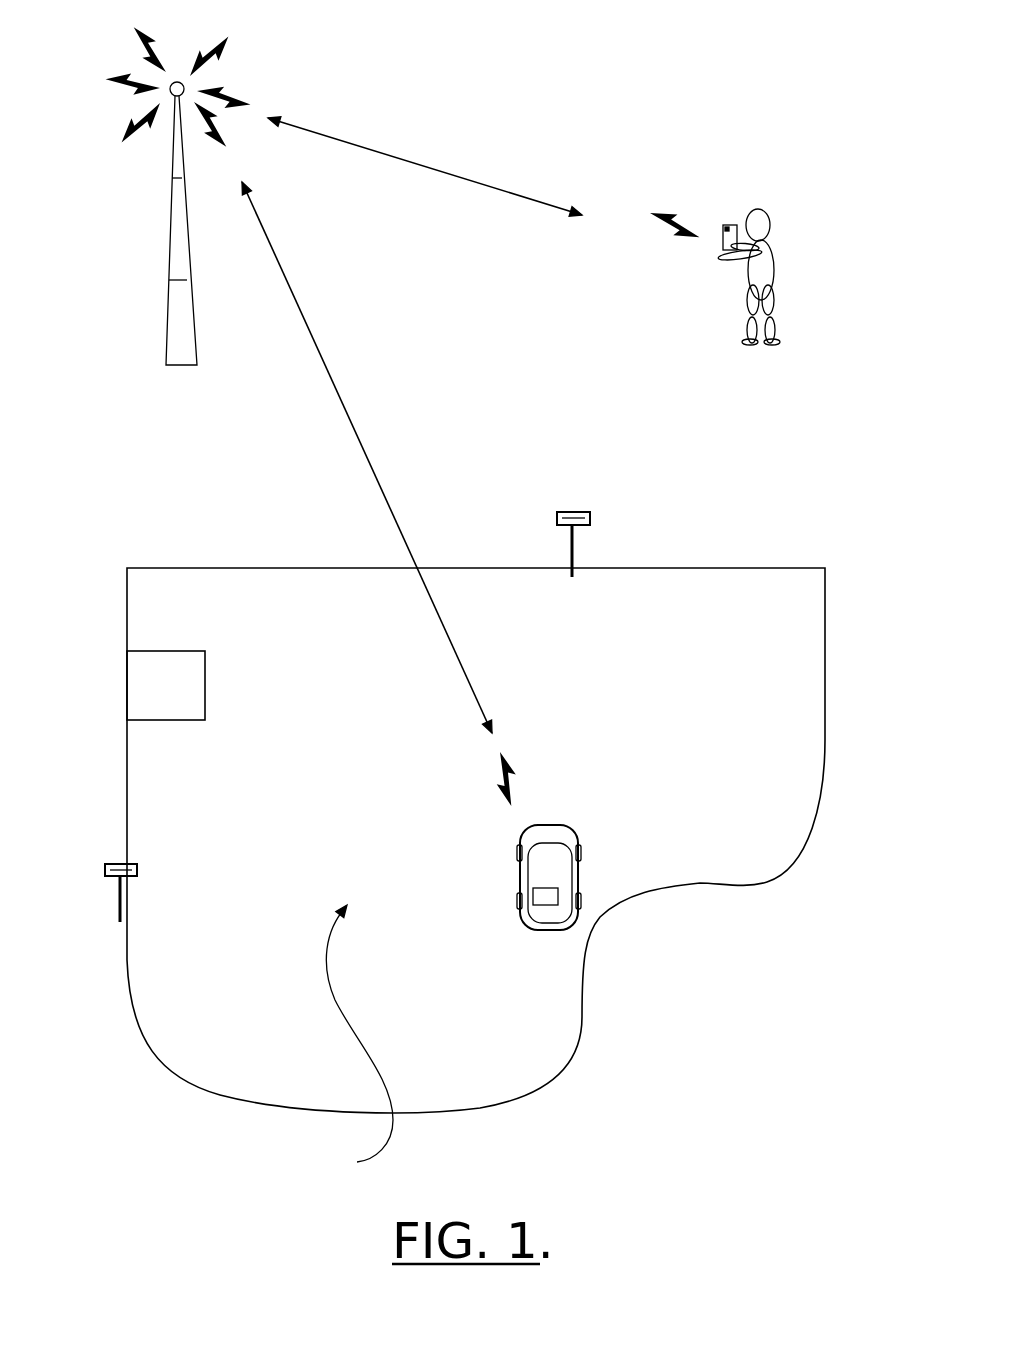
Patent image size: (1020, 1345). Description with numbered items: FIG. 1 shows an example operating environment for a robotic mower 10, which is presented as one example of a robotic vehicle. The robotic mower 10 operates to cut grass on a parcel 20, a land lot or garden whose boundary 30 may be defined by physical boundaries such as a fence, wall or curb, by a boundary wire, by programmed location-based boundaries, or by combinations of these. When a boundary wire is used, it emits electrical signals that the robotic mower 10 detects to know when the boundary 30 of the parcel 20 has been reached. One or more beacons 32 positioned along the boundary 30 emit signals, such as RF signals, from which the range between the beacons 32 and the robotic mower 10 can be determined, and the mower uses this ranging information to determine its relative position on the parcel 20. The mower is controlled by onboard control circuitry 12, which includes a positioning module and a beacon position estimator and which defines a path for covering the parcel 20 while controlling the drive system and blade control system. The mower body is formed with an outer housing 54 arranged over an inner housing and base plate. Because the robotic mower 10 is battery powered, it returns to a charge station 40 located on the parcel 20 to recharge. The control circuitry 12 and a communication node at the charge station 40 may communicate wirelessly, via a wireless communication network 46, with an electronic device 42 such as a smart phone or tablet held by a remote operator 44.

The robotic mower 10 is at (591, 855).
The control circuitry 12 is at (551, 886).
The parcel 20 is at (355, 1042).
The boundary 30 is at (582, 1017).
The beacons 32 is at (575, 540).
The charge station 40 is at (152, 682).
The electronic device 42 is at (729, 213).
The remote operator 44 is at (799, 213).
The wireless communication network 46 is at (314, 315).
The outer housing 54 is at (544, 826).